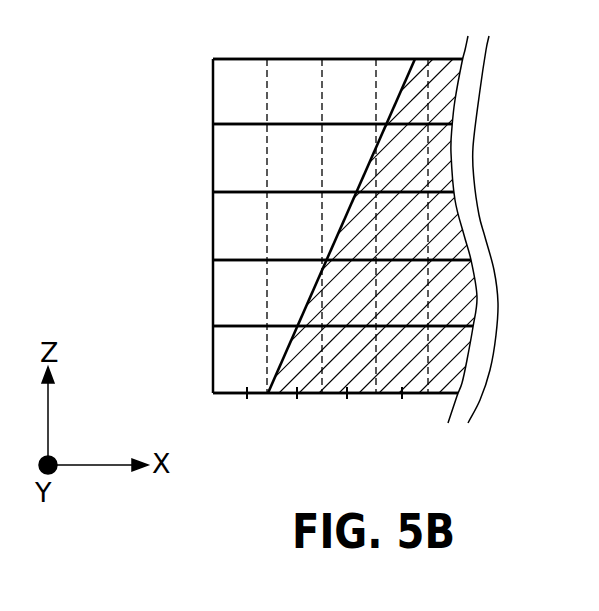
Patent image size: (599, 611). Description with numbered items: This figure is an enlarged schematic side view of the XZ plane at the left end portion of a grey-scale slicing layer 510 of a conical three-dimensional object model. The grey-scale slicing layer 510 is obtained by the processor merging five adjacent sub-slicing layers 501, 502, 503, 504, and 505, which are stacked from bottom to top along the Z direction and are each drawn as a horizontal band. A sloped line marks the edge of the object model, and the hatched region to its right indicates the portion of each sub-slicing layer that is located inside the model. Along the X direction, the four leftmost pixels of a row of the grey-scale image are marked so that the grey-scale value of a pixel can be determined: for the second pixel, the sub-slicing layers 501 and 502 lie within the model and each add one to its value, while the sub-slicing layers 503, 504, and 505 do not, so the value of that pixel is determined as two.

The sub-slicing layer 501 is at (229, 368).
The sub-slicing layer 502 is at (229, 300).
The sub-slicing layer 503 is at (229, 234).
The sub-slicing layer 504 is at (229, 168).
The sub-slicing layer 505 is at (229, 98).
The grey-scale slicing layer 510 is at (348, 58).